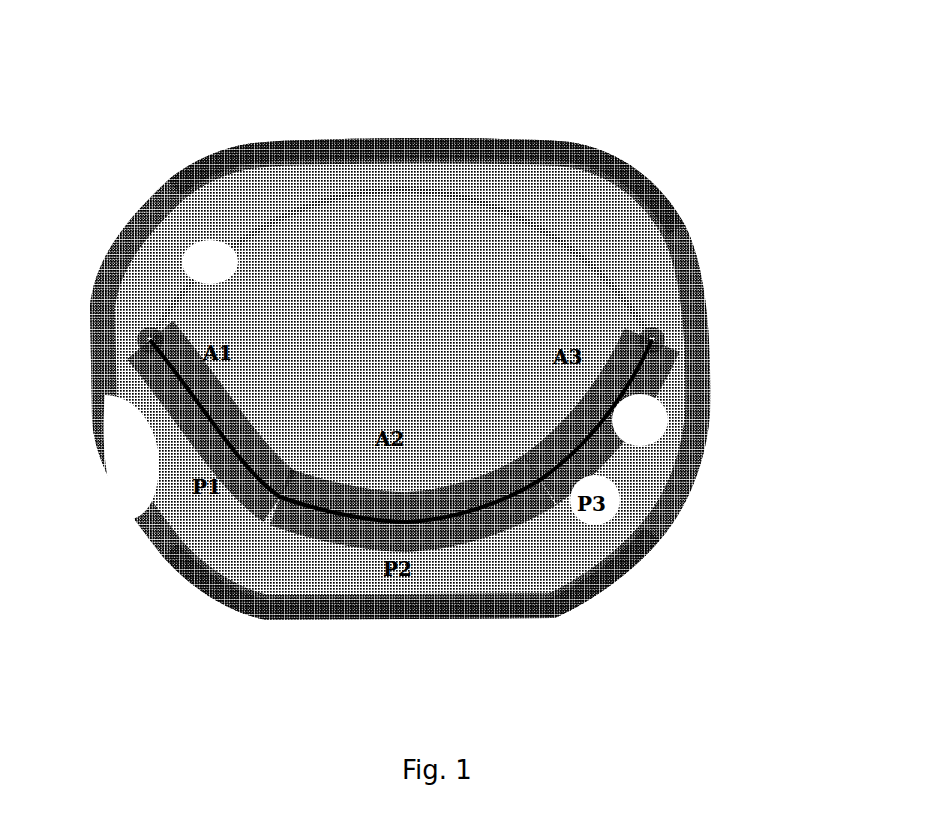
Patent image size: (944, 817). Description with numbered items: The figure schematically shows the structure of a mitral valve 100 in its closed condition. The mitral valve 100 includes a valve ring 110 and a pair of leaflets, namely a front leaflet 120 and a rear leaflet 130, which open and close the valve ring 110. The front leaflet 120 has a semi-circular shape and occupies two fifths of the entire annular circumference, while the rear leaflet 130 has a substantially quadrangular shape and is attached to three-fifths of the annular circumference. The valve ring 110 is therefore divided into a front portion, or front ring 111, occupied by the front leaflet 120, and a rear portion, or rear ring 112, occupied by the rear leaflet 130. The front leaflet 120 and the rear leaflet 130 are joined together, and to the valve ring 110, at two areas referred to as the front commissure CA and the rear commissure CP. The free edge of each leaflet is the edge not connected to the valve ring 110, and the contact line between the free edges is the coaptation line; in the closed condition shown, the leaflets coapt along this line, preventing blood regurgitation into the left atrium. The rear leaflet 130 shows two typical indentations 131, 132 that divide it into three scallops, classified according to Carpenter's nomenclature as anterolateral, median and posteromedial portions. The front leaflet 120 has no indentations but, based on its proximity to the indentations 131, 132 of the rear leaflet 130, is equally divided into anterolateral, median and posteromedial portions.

The mitral valve 100 is at (508, 106).
The valve ring 110 is at (665, 450).
The front ring 111 is at (425, 180).
The rear ring 112 is at (370, 610).
The front leaflet 120 is at (393, 285).
The rear leaflet 130 is at (440, 575).
The indentation 131 is at (263, 497).
The indentation 132 is at (520, 493).
The front commissure CA is at (151, 338).
The rear commissure CP is at (651, 334).